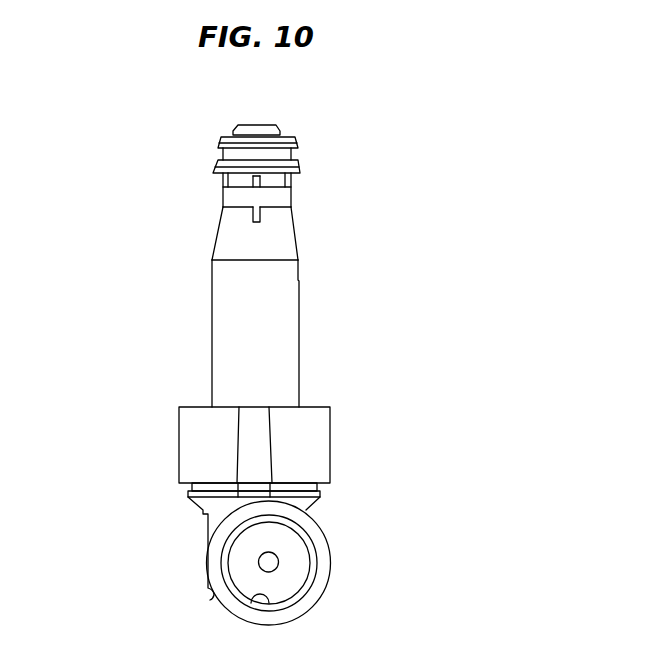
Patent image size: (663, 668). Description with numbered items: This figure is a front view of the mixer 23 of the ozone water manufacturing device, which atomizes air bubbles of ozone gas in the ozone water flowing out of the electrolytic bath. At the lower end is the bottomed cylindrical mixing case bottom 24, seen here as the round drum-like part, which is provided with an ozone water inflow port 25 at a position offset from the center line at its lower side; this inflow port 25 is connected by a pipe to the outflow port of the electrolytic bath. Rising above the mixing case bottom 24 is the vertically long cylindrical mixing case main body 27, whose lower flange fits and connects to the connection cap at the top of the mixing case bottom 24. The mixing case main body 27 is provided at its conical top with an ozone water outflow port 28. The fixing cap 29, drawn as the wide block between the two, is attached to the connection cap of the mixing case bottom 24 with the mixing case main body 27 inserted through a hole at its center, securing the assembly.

The mixer 23 is at (170, 321).
The mixing case bottom 24 is at (215, 519).
The ozone water inflow port 25 is at (253, 599).
The mixing case main body 27 is at (280, 325).
The ozone water outflow port 28 is at (257, 122).
The fixing cap 29 is at (313, 454).